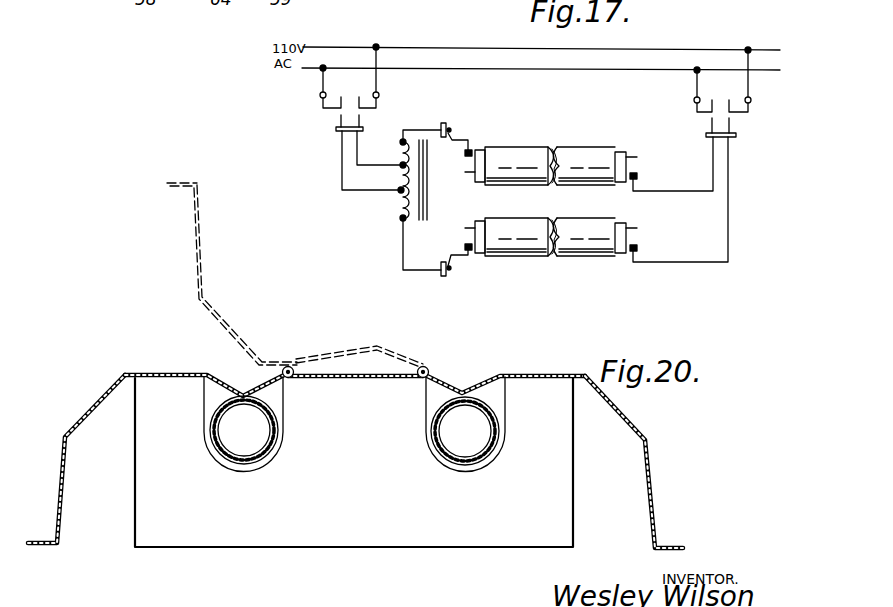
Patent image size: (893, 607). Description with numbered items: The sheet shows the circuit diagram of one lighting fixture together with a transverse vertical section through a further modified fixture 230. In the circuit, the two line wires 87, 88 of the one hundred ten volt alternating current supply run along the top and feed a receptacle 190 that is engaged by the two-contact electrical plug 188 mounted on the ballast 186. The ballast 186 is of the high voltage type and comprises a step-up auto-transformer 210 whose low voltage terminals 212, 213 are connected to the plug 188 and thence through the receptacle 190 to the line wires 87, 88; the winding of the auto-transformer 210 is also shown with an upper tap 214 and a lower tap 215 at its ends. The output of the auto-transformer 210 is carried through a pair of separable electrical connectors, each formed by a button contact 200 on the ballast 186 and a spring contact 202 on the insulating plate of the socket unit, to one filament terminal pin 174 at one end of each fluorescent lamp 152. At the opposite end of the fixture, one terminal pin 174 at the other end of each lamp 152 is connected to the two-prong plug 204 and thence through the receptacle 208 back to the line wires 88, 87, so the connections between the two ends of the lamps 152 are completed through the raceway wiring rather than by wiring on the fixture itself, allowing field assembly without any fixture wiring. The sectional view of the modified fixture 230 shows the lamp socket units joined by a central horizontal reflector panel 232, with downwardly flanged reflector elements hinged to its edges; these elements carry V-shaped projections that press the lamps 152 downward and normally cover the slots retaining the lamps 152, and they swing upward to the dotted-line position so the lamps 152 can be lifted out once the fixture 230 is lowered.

In FIG. 17, the line wire 87 is at (483, 48).
In FIG. 17, the line wire 88 is at (482, 69).
In FIG. 17, the receptacle 190 is at (343, 92).
In FIG. 17, the two-contact electrical plug 188 is at (336, 128).
In FIG. 17, the coil top tap 214 is at (402, 141).
In FIG. 17, the low voltage terminal 212 is at (402, 164).
In FIG. 17, the low voltage terminal 213 is at (400, 189).
In FIG. 17, the step-up auto-transformer 210 is at (400, 203).
In FIG. 17, the coil bottom tap 215 is at (400, 220).
In FIG. 17, the ballast 186 is at (400, 221).
In FIG. 17, the fluorescent lamp 152 is at (503, 186).
In FIG. 17, the filament terminal pin 174 is at (637, 230).
In FIG. 17, the two-prong plug 204 is at (737, 138).
In FIG. 17, the receptacle 208 is at (719, 98).
In FIG. 17, the spring contact 202 is at (449, 270).
In FIG. 17, the button contact 200 is at (441, 275).
In FIG. 20, the modified fixture 230 is at (246, 560).
In FIG. 20, the central horizontal reflector panel 232 is at (352, 375).